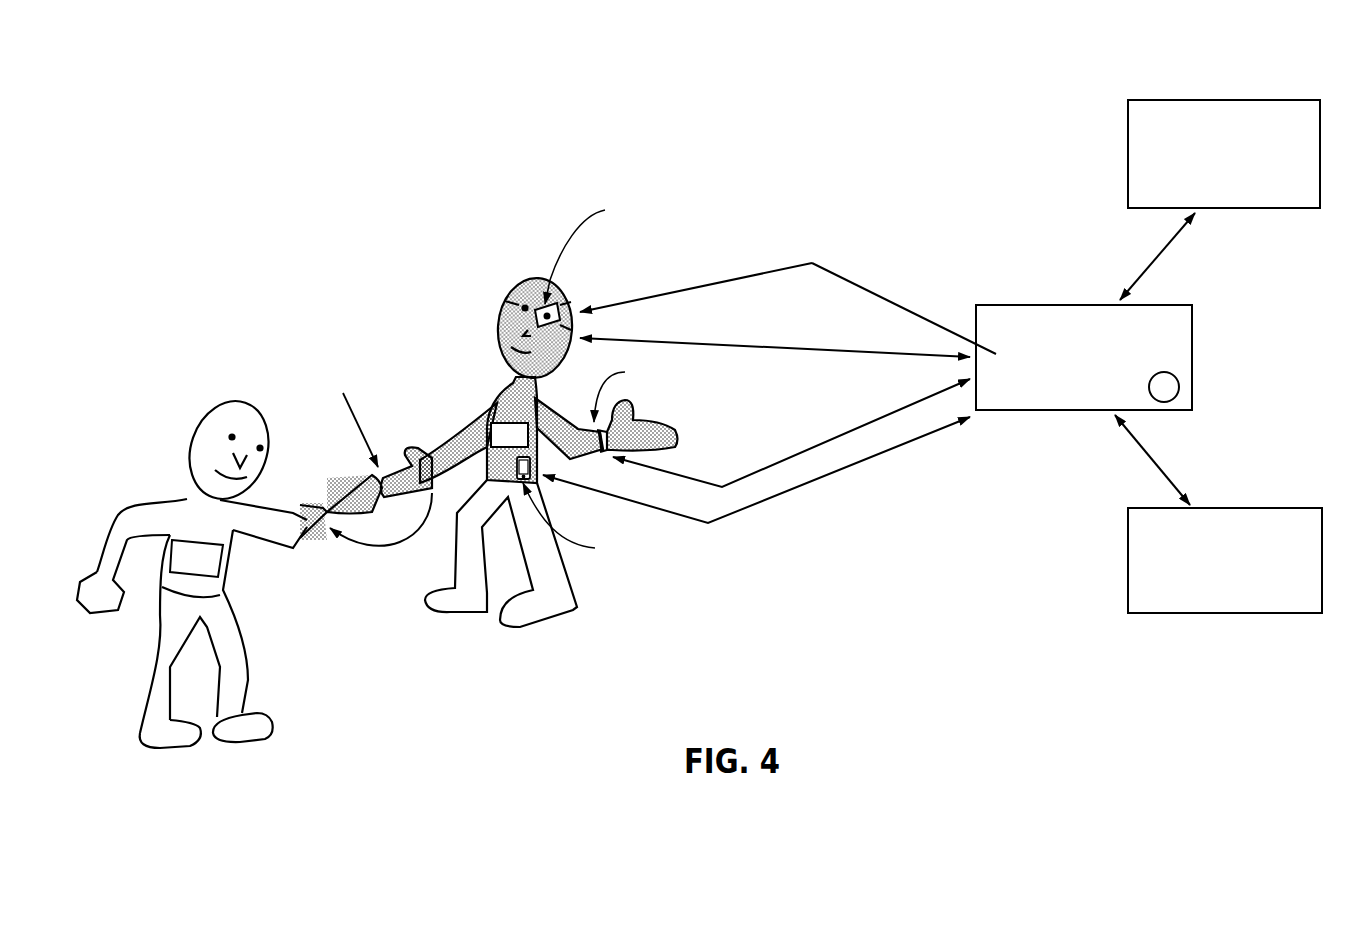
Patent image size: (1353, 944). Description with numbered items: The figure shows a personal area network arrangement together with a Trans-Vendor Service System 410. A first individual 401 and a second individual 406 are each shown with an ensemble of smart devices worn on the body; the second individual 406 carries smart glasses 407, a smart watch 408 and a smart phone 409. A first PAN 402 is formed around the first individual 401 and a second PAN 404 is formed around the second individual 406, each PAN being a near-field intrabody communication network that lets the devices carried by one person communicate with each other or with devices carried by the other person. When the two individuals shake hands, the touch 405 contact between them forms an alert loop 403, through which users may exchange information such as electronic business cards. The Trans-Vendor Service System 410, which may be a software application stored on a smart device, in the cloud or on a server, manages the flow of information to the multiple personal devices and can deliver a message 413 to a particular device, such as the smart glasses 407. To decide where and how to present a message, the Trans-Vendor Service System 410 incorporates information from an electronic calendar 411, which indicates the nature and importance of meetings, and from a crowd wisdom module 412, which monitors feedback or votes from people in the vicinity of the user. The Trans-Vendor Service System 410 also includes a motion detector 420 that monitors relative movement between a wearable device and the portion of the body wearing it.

The first individual 401 is at (210, 412).
The first PAN 402 is at (193, 537).
The alert loop 403 is at (368, 628).
The second PAN 404 is at (510, 416).
The touch 405 is at (323, 360).
The second individual 406 is at (499, 324).
The smart glasses 407 is at (610, 178).
The smart watch 408 is at (725, 393).
The smart phone 409 is at (682, 577).
The Trans-Vendor Service System 410 is at (1085, 359).
The electronic calendar 411 is at (1225, 560).
The crowd wisdom module 412 is at (1224, 154).
The message 413 is at (828, 272).
The motion detector 420 is at (1179, 387).